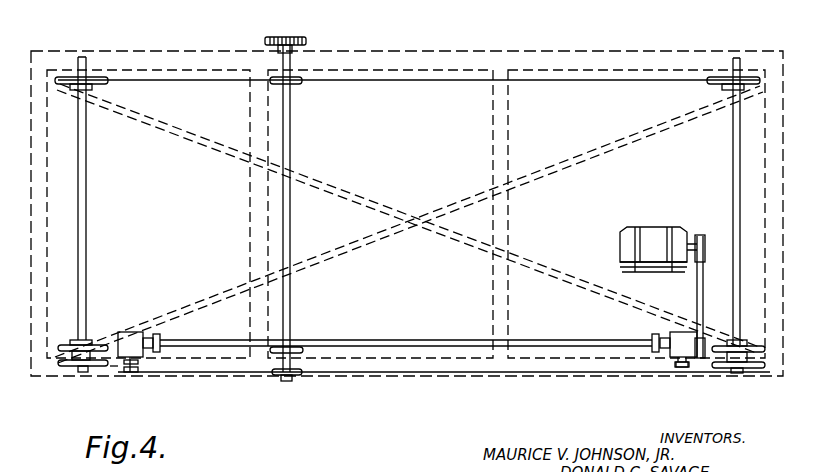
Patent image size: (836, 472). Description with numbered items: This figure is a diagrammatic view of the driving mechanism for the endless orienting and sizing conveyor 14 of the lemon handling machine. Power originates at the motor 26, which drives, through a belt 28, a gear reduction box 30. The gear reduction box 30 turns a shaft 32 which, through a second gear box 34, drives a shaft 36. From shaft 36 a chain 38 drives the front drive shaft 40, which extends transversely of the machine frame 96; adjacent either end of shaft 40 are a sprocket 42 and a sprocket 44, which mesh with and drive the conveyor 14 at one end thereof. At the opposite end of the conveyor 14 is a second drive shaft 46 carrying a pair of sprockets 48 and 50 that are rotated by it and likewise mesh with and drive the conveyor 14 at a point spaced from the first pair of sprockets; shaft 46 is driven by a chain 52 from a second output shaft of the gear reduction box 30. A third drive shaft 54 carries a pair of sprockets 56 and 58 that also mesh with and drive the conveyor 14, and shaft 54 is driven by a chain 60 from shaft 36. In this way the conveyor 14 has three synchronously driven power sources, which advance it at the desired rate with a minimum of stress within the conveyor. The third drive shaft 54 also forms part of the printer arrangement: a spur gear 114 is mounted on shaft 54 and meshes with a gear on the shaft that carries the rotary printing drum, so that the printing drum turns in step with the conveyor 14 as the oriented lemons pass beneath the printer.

The machine frame 96 is at (67, 50).
The orienting and sizing conveyor 14 is at (392, 80).
The front drive shaft 40 is at (86, 190).
The sprocket 42 is at (94, 78).
The third drive shaft 54 is at (290, 208).
The spur gear 114 is at (306, 40).
The sprocket 56 is at (300, 84).
The second drive shaft 46 is at (733, 172).
The sprocket 48 is at (744, 80).
The motor 26 is at (620, 242).
The belt 28 is at (697, 288).
The gear reduction box 30 is at (672, 333).
The shaft 32 is at (360, 340).
The second gear box 34 is at (128, 332).
The shaft 36 is at (136, 366).
The sprocket 44 is at (64, 366).
The chain 38 is at (115, 370).
The chain 60 is at (220, 372).
The sprocket 58 is at (293, 347).
The chain 52 is at (700, 362).
The sprocket 50 is at (750, 368).